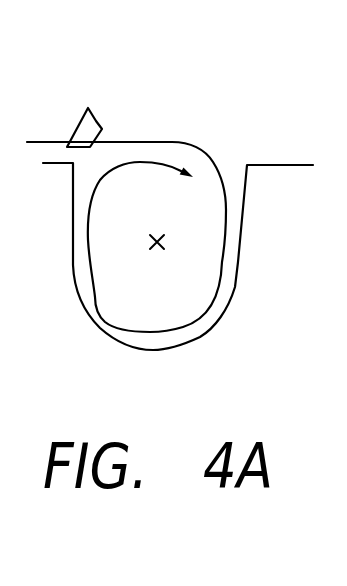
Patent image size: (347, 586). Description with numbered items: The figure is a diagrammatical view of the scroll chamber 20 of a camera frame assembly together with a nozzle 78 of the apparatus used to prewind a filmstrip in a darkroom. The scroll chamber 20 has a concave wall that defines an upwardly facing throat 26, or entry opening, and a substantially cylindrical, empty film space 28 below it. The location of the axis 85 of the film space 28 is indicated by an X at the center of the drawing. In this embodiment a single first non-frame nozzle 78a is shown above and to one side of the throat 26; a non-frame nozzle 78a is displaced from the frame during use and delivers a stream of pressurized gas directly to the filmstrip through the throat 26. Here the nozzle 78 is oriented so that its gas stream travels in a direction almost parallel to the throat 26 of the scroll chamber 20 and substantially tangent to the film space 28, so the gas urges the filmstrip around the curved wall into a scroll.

The scroll chamber 20 is at (238, 263).
The throat 26 is at (216, 146).
The film space 28 is at (192, 224).
The nozzle 78 is at (157, 117).
The non-frame nozzle 78a is at (96, 120).
The axis 85 is at (157, 245).